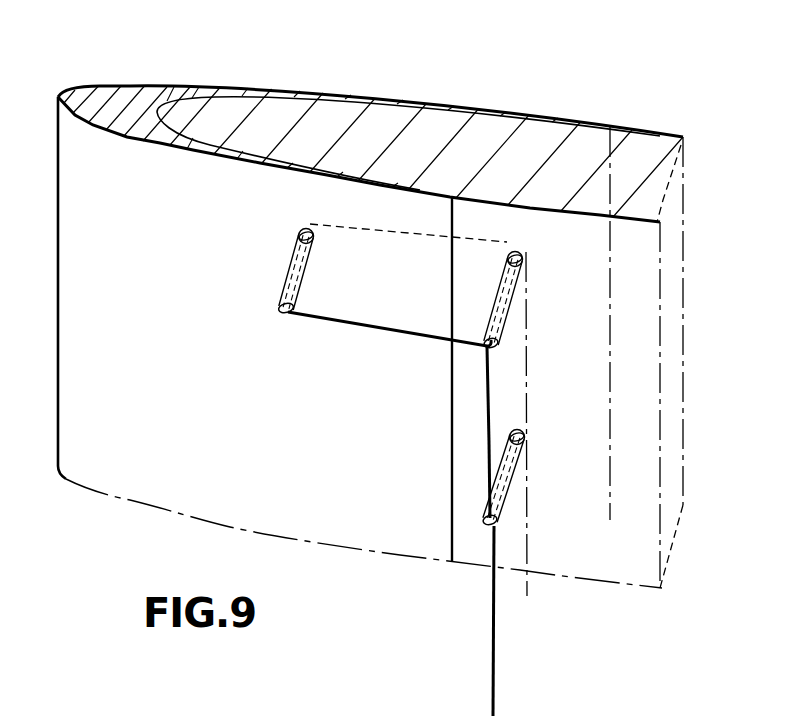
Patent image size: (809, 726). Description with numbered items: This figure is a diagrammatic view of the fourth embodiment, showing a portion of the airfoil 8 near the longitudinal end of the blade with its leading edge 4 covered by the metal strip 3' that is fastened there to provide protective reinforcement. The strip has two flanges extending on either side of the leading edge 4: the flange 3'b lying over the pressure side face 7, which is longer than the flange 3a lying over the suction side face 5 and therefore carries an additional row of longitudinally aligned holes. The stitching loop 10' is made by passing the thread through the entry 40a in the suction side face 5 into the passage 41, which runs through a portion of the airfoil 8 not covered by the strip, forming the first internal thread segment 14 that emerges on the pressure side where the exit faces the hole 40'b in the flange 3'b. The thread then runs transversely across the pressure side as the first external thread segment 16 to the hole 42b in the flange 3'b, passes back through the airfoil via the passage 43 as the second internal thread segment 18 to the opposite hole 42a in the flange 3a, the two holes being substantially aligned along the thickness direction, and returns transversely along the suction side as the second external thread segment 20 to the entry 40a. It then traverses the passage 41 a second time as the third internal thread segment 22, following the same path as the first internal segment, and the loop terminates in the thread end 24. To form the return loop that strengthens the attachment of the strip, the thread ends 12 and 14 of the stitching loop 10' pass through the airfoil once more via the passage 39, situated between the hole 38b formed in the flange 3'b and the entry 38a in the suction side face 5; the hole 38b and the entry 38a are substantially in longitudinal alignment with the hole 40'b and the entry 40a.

The metal strip 3' is at (350, 312).
The leading edge 4 is at (154, 108).
The flange 3'b is at (362, 83).
The flange 3a is at (193, 152).
The pressure side face 7 is at (643, 128).
The airfoil 8 is at (625, 162).
The suction side face 5 is at (622, 237).
The first external thread segment 16 is at (362, 223).
The stitching loop 10' is at (187, 257).
The second internal thread segment 18 is at (297, 262).
The passage 43 is at (303, 275).
The hole 42b is at (304, 228).
The hole 42a is at (282, 318).
The second external thread segment 20 is at (377, 337).
The thread end 24 is at (488, 390).
The thread end 12 is at (487, 442).
The first internal thread segment 14 is at (527, 268).
The passage 41 is at (517, 290).
The third internal thread segment 22 is at (495, 318).
The hole 40'b is at (544, 243).
The entry 40a is at (496, 348).
The passage 39 is at (520, 468).
The hole 38b is at (517, 428).
The entry 38a is at (500, 530).